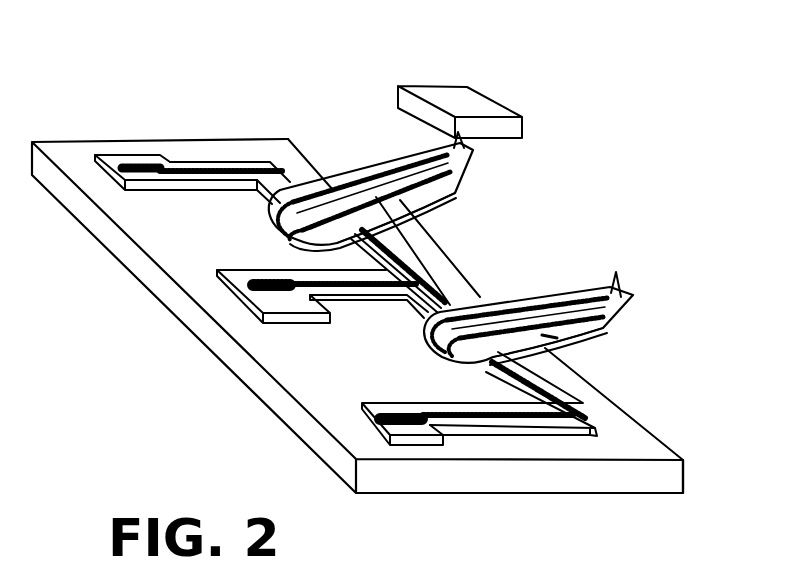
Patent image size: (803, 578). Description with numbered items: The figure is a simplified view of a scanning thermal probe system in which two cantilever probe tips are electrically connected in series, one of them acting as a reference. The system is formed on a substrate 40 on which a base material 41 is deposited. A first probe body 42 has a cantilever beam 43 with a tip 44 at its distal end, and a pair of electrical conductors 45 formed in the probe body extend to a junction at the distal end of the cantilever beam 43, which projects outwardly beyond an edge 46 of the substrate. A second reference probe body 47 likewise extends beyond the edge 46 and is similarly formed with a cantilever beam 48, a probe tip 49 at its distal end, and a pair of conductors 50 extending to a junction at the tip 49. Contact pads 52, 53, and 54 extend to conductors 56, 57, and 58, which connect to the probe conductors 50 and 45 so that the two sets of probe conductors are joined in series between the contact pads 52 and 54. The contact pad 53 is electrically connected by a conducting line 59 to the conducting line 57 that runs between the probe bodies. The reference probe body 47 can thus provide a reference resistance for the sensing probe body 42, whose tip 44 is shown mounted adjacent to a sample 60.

The substrate 40 is at (132, 263).
The base material 41 is at (583, 410).
The first probe body 42 is at (478, 192).
The cantilever beam 43 is at (418, 208).
The tip 44 is at (460, 137).
The electrical conductors 45 is at (390, 187).
The edge of the substrate 46 is at (683, 480).
The second reference probe body 47 is at (645, 330).
The cantilever beam 48 is at (548, 338).
The probe tip 49 is at (622, 285).
The conductors 50 is at (455, 352).
The contact pad 52 is at (362, 414).
The contact pad 53 is at (267, 273).
The contact pad 54 is at (133, 165).
The conductor 56 is at (480, 418).
The conductor 57 is at (400, 262).
The conductor 58 is at (203, 168).
The conducting line 59 is at (357, 298).
The sample 60 is at (467, 92).